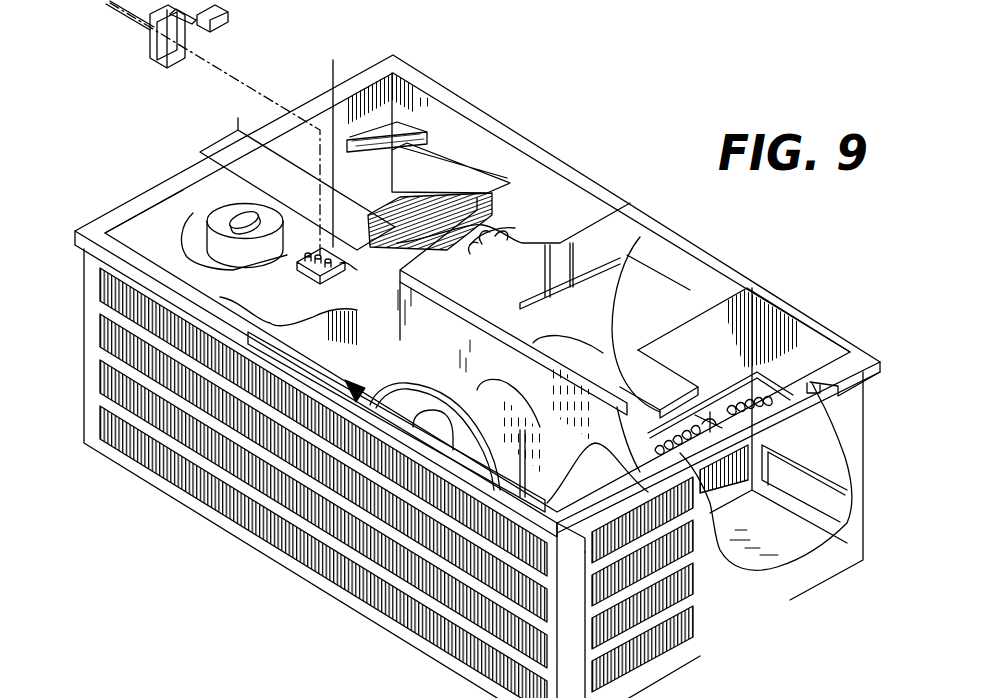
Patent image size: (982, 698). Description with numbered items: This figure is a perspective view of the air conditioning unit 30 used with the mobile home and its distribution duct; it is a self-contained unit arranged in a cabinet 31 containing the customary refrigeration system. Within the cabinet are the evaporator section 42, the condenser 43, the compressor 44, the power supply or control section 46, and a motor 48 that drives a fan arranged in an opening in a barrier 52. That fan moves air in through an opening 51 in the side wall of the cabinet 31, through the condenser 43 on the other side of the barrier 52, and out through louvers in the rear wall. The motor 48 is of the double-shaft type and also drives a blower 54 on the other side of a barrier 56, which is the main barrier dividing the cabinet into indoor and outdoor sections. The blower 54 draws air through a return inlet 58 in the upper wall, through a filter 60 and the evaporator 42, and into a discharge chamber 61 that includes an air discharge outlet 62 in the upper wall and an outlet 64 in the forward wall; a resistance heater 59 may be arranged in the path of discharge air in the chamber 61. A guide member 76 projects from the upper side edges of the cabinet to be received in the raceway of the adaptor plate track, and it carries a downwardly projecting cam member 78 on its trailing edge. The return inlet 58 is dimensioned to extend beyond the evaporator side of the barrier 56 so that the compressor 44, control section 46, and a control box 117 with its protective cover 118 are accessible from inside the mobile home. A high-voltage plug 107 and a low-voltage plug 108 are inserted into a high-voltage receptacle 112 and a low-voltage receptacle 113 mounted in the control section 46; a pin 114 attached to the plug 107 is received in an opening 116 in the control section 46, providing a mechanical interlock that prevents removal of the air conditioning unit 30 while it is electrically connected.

The air conditioning unit 30 is at (796, 276).
The cabinet 31 is at (748, 612).
The evaporator section 42 is at (473, 258).
The condenser 43 is at (272, 336).
The compressor 44 is at (191, 220).
The control section 46 is at (297, 262).
The motor 48 is at (503, 383).
The opening 51 is at (690, 634).
The barrier 52 is at (400, 372).
The blower 54 is at (627, 258).
The barrier 56 is at (450, 335).
The return inlet 58 is at (483, 141).
The resistance heater 59 is at (713, 405).
The filter 60 is at (415, 125).
The discharge chamber 61 is at (803, 540).
The air discharge outlet 62 is at (818, 332).
The outlet 64 is at (787, 471).
The guide member 76 is at (840, 393).
The cam member 78 is at (573, 556).
The high-voltage plug 107 is at (148, 50).
The low-voltage plug 108 is at (228, 12).
The high-voltage receptacle 112 is at (312, 278).
The low-voltage receptacle 113 is at (330, 250).
The pin 114 is at (190, 24).
The opening 116 is at (352, 272).
The control box 117 is at (302, 184).
The protective cover 118 is at (340, 180).